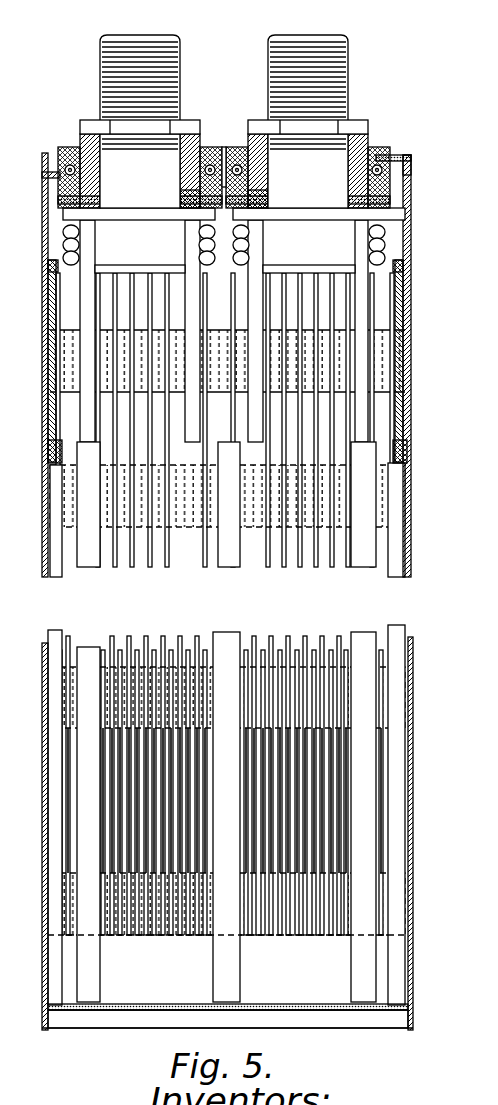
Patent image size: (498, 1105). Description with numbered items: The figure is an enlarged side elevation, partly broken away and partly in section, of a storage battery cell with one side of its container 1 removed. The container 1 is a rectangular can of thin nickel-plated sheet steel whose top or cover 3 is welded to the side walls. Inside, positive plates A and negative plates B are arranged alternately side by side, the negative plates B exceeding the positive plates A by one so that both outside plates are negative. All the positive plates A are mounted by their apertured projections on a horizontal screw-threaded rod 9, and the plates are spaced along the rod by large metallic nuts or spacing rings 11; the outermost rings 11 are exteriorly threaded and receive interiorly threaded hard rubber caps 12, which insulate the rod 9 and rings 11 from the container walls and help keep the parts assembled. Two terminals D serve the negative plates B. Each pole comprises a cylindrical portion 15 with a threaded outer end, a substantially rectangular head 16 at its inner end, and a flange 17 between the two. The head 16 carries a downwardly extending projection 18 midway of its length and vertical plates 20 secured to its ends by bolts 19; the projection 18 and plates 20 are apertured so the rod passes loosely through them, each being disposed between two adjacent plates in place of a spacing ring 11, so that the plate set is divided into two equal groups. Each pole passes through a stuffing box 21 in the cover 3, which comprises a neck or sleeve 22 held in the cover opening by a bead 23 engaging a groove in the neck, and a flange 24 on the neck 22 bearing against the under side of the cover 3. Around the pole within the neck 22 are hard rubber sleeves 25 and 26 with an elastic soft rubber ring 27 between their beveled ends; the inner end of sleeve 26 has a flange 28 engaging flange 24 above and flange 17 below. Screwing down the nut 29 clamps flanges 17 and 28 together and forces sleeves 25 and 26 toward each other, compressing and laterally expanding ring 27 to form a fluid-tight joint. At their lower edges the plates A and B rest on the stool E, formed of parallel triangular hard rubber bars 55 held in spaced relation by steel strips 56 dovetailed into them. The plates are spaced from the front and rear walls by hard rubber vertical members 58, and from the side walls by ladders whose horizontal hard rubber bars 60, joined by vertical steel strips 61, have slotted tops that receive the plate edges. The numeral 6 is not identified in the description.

The terminal for negative plates D is at (266, 78).
The nut 29 is at (90, 120).
The hard rubber sleeve or washer 25 is at (78, 132).
The bead 23 is at (70, 165).
The top or cover 3 is at (45, 155).
The neck or sleeve 22 is at (210, 145).
The stuffing box 21 is at (372, 142).
The flange of neck 24 is at (58, 175).
The flange of sleeve 28 is at (60, 200).
The cylindrical portion 15 is at (224, 171).
The elastic ring 27 is at (100, 172).
The flange of pole 17 is at (134, 218).
The hard rubber sleeve or washer 26 is at (190, 198).
The bolt 19 is at (64, 242).
The vertical plate 20 is at (90, 243).
The head 16 is at (225, 258).
The downwardly extending projection 18 is at (140, 285).
The spacing ring 11 is at (70, 289).
The screw-threaded rod 9 is at (56, 323).
The separator band 6 is at (50, 358).
The hard rubber cap 12 is at (405, 458).
The horizontal bar 60 is at (52, 505).
The vertical steel strip 61 is at (85, 567).
The positive element or plate A is at (292, 640).
The negative element or plate B is at (335, 630).
The vertical member 58 is at (52, 630).
The battery can or container 1 is at (45, 832).
The bar 55 is at (228, 951).
The frame or stool E is at (228, 1000).
The steel strip 56 is at (100, 1003).